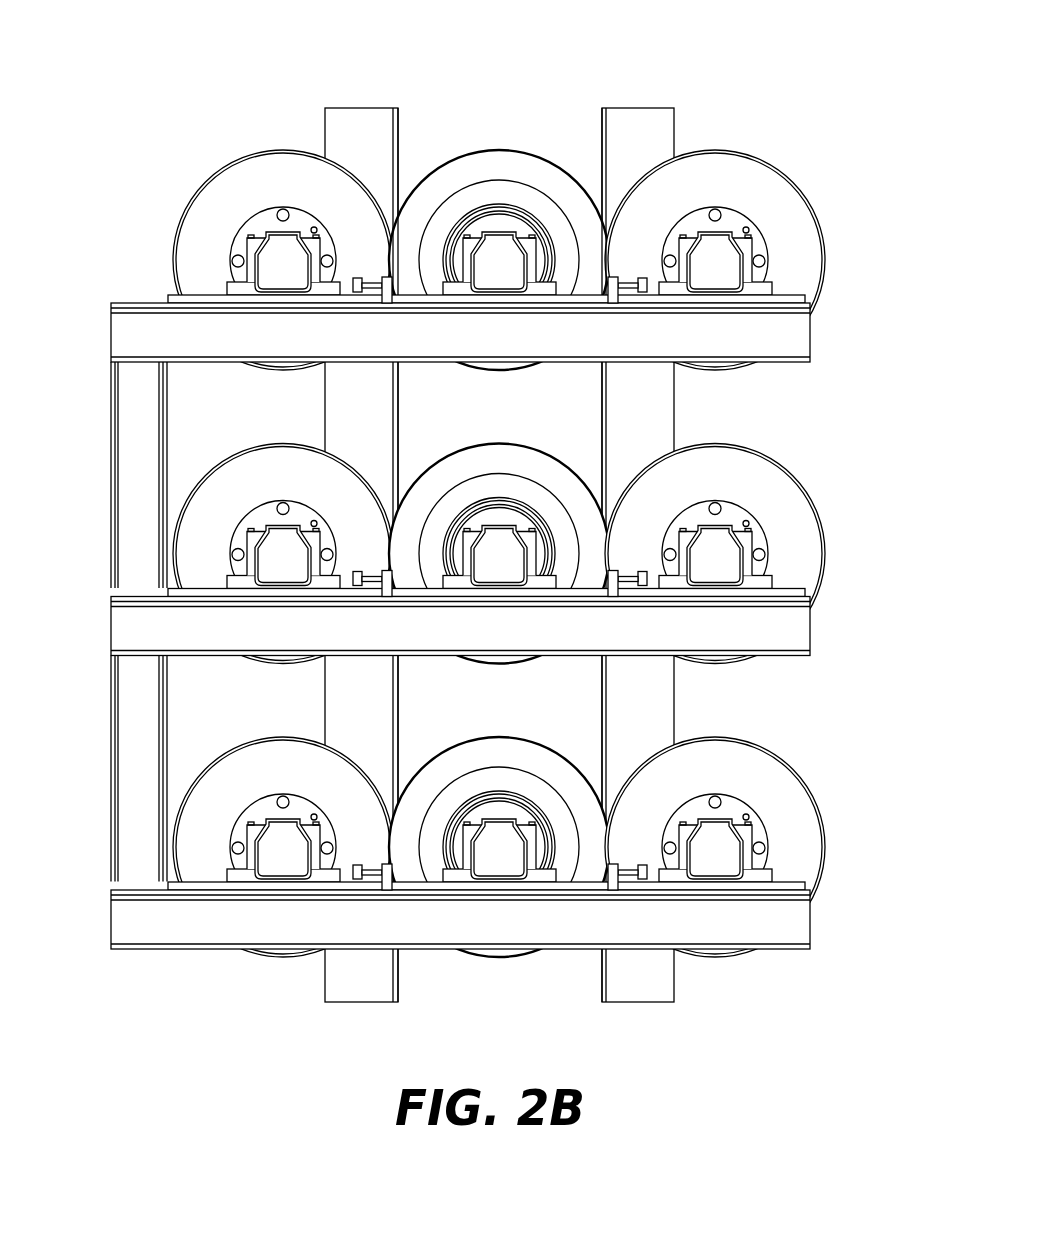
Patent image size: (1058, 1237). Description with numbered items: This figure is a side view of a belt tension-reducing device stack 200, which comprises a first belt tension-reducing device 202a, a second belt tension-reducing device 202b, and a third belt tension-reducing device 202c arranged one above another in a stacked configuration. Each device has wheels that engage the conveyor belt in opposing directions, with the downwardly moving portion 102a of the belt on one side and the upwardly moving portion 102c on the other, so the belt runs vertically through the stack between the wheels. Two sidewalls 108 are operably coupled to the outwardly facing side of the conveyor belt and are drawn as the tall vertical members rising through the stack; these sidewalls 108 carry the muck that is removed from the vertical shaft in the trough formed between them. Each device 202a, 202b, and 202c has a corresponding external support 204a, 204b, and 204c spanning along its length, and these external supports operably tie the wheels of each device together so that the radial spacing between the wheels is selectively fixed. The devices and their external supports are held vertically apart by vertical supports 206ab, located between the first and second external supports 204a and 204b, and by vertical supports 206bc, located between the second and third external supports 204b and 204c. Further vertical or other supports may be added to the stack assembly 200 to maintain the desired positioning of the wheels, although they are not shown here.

The belt tension-reducing device stack 200 is at (812, 64).
The sidewall 108 is at (363, 118).
The downwardly moving portion of conveyor belt 102a is at (399, 137).
The upwardly moving portion of conveyor belt 102c is at (600, 137).
The first belt tension-reducing device 202a is at (846, 253).
The second belt tension-reducing device 202b is at (846, 547).
The third belt tension-reducing device 202c is at (846, 840).
The external support 204a is at (122, 334).
The external support 204b is at (122, 628).
The external support 204c is at (122, 920).
The vertical support 206ab is at (123, 481).
The vertical support 206bc is at (123, 781).